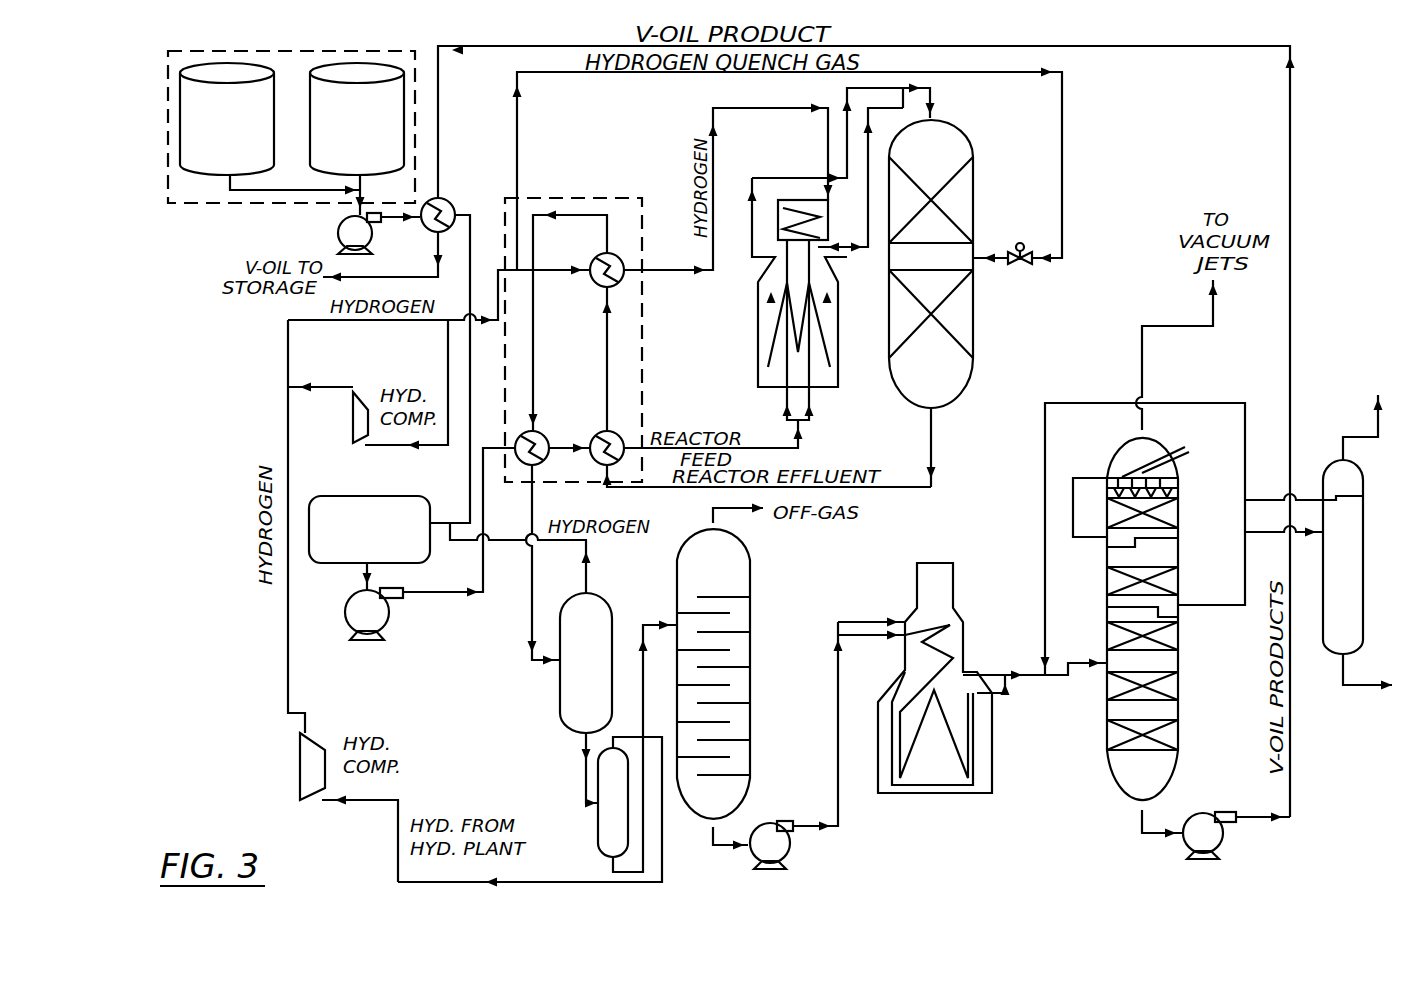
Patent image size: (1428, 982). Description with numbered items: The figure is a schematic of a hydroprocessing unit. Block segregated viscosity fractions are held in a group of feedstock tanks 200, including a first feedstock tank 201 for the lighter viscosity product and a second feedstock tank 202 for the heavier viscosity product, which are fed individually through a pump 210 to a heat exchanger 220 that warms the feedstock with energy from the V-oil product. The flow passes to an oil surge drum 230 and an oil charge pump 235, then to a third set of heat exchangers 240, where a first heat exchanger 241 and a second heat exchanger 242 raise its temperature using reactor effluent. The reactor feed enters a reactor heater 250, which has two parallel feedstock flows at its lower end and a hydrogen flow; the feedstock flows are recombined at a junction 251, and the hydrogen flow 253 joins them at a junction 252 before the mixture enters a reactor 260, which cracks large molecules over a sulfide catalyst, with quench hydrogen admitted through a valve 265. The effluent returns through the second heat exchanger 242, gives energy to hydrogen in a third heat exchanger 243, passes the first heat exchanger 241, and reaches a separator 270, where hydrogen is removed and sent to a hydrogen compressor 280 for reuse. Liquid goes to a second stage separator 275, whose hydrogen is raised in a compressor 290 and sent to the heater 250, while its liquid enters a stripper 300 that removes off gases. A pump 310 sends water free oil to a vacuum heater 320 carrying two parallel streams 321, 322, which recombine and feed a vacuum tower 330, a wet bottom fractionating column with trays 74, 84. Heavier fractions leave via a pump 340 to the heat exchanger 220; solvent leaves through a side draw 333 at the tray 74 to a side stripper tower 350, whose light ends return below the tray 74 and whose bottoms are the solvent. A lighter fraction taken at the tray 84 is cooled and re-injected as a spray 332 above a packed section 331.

The group of feedstock tanks 200 is at (244, 205).
The first feedstock tank 201 is at (250, 152).
The second feedstock tank 202 is at (380, 152).
The pump 210 is at (340, 238).
The heat exchanger 220 is at (447, 203).
The oil surge drum 230 is at (392, 537).
The oil charge pump 235 is at (360, 620).
The third set of heat exchangers 240 is at (580, 198).
The first heat exchanger 241 is at (543, 437).
The second heat exchanger 242 is at (597, 456).
The third heat exchanger 243 is at (593, 263).
The reactor heater 250 is at (758, 340).
The junction 251 is at (845, 135).
The junction 252 is at (910, 78).
The hydrogen flow 253 is at (870, 252).
The reactor 260 is at (975, 186).
The valve 265 is at (1026, 265).
The separator 270 is at (560, 700).
The second stage separator 275 is at (598, 852).
The hydrogen compressor 280 is at (352, 432).
The compressor 290 is at (298, 780).
The stripper 300 is at (738, 572).
The pump 310 is at (793, 858).
The vacuum heater 320 is at (930, 565).
The stream 321 is at (870, 622).
The stream 322 is at (880, 635).
The vacuum tower 330 is at (1182, 559).
The packed section 331 is at (1168, 513).
The spray 332 is at (1177, 461).
The side draw 333 is at (1228, 582).
The tray 84 is at (1125, 545).
The tray 74 is at (1160, 607).
The pump 340 is at (1190, 842).
The side stripper tower 350 is at (1365, 555).